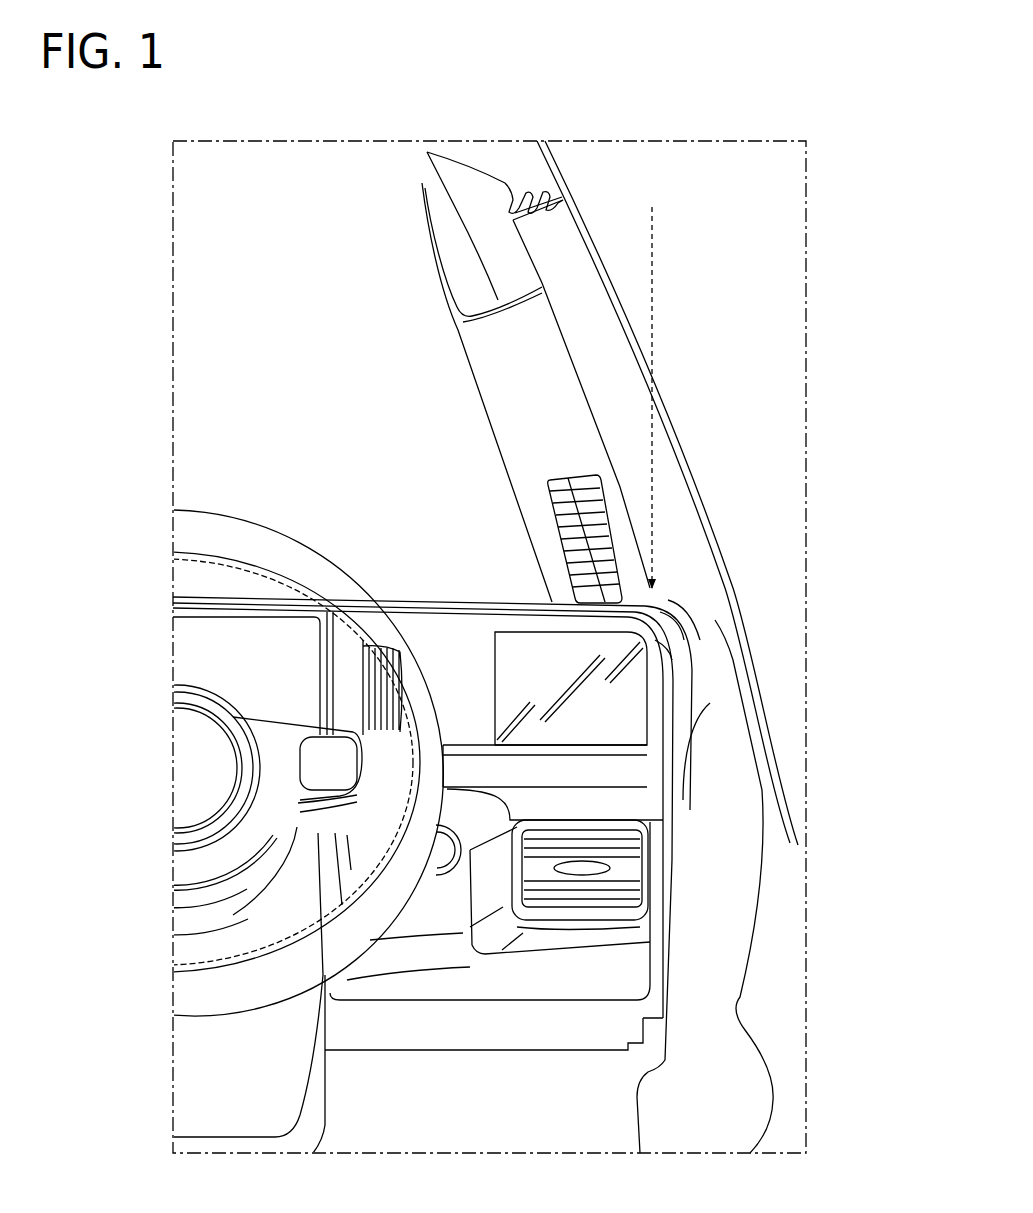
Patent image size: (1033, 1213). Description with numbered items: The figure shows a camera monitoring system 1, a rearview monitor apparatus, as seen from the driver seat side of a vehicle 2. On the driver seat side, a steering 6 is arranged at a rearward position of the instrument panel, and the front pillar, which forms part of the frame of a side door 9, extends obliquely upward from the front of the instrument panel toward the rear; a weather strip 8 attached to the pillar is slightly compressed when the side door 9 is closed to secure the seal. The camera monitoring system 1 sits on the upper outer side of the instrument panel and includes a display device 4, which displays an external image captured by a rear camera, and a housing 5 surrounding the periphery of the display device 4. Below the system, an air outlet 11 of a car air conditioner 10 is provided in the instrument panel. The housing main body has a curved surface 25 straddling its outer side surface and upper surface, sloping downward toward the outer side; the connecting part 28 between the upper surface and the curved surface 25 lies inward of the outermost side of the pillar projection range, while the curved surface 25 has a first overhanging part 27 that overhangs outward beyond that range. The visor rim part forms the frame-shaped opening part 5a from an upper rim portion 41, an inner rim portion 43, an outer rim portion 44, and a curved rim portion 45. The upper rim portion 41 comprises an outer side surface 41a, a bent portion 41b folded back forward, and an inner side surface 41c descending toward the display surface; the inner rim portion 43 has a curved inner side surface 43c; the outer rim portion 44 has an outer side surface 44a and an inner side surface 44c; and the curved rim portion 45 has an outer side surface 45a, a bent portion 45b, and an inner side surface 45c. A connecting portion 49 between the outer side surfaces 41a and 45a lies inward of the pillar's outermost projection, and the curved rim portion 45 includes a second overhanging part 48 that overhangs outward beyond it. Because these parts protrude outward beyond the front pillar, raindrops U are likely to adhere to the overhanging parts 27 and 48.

The camera monitoring system 1 is at (512, 831).
The vehicle 2 is at (763, 932).
The display device 4 is at (518, 645).
The housing 5 is at (700, 650).
The opening part 5a is at (655, 688).
The steering 6 is at (232, 515).
The weather strip 8 is at (578, 242).
The side door 9 is at (615, 280).
The car air conditioner 10 is at (718, 875).
The air outlet 11 is at (633, 868).
The curved surface 25 is at (732, 556).
The first overhanging part 27 is at (695, 600).
The connecting part 28 is at (638, 521).
The upper rim portion 41 is at (342, 607).
The outer side surface 41a is at (482, 610).
The bent portion 41b is at (458, 612).
The inner side surface 41c is at (425, 610).
The inner rim portion 43 is at (318, 678).
The inner side surface 43c is at (457, 663).
The outer rim portion 44 is at (635, 871).
The outer side surface 44a is at (665, 693).
The inner side surface 44c is at (642, 746).
The curved rim portion 45 is at (782, 672).
The outer side surface 45a is at (686, 620).
The bent portion 45b is at (670, 653).
The inner side surface 45c is at (655, 693).
The second overhanging part 48 is at (782, 672).
The connecting portion 49 is at (638, 604).
The raindrops U is at (655, 270).